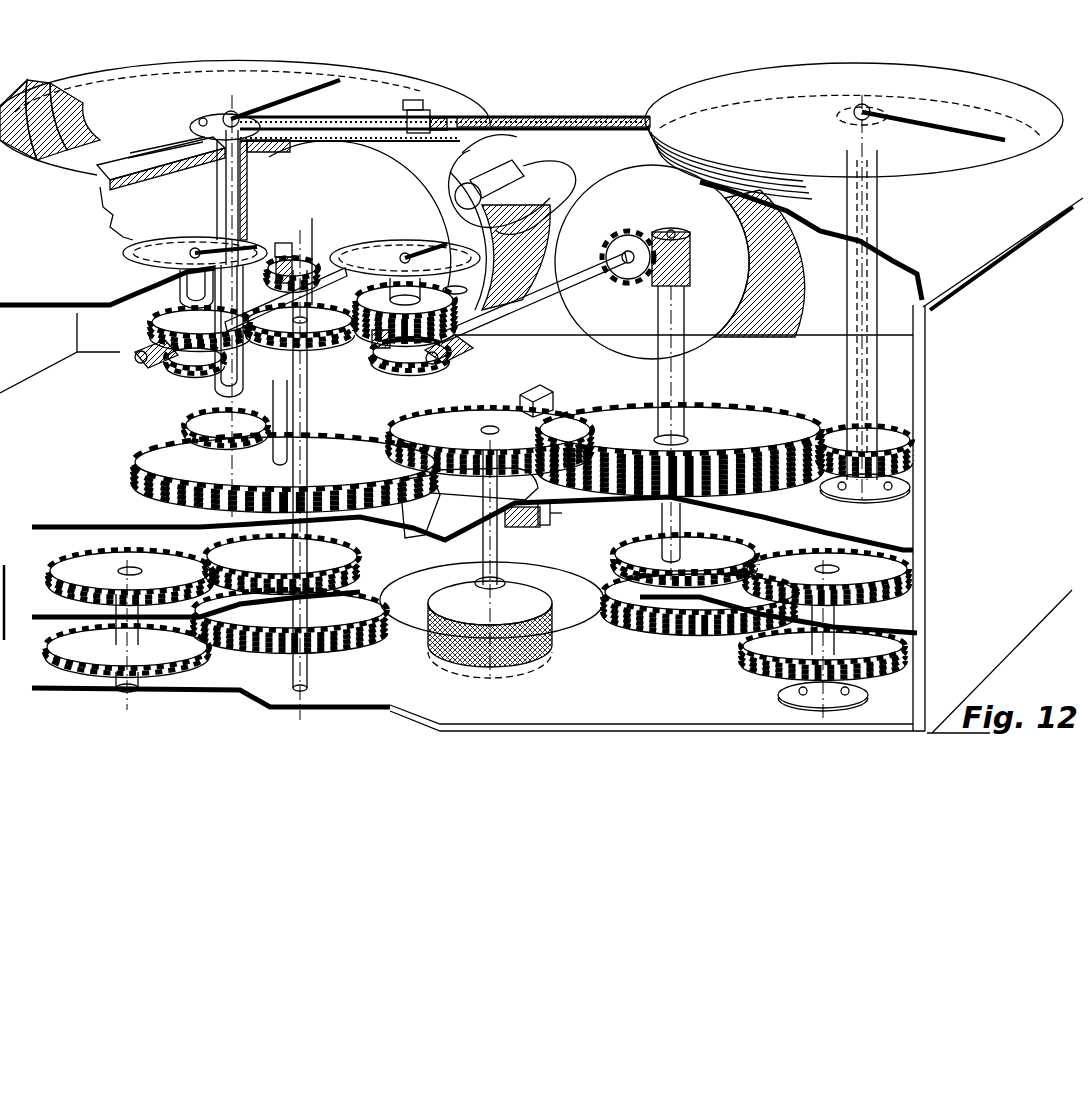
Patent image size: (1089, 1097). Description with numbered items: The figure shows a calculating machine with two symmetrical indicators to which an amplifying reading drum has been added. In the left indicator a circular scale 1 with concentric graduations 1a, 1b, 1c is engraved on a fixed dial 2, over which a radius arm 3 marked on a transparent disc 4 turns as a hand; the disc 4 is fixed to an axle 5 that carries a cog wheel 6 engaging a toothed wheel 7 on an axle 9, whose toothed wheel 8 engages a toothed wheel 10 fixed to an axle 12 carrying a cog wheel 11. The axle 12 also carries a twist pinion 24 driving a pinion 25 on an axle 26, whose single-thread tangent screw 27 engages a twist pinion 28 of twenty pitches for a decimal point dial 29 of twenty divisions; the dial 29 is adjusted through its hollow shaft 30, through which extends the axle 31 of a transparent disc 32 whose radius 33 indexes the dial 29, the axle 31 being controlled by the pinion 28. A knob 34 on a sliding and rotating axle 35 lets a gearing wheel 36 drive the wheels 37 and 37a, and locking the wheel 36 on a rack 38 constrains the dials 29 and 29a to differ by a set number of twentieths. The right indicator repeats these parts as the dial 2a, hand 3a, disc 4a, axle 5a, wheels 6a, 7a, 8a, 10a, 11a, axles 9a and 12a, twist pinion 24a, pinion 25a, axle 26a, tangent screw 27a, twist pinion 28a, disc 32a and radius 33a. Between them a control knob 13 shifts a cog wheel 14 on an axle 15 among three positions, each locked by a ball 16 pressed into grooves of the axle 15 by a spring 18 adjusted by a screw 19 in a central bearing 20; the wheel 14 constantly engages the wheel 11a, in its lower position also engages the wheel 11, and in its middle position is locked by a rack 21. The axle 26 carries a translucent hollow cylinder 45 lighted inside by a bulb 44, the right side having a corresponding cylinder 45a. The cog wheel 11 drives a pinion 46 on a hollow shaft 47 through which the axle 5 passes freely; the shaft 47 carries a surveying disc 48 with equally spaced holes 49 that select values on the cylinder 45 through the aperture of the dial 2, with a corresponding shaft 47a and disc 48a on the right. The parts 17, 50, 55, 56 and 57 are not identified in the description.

The circular scale 1 is at (80, 108).
The concentric graduation 1a is at (28, 132).
The concentric graduation 1b is at (50, 140).
The concentric graduation 1c is at (75, 150).
The fixed dial 2 is at (150, 188).
The radius arm 3 is at (268, 112).
The transparent disc 4 is at (138, 150).
The axle 5 is at (240, 198).
The surveying disc 48 is at (165, 190).
The stop 50 is at (418, 100).
The holes 49 is at (425, 135).
The electrical bulb 44 is at (478, 182).
The cylinder 45 is at (405, 164).
The cylinder 45a is at (598, 168).
The transparent disc 4a is at (655, 152).
The fixed dial 2a is at (670, 167).
The surveying disc 48a is at (700, 185).
The radius arm 3a is at (953, 128).
The axle 5a is at (878, 224).
The hollow shaft 47a is at (847, 354).
The twist pinion 24 is at (280, 243).
The rack 38 is at (311, 251).
The pinion 25 is at (372, 242).
The radius 33a is at (425, 247).
The radius 33 is at (215, 249).
The transparent disc 32 is at (135, 250).
The axle 31 is at (185, 266).
The hollow shaft 30 is at (173, 300).
The wheel 37 is at (152, 324).
The gearing wheel 36 is at (300, 328).
The decimal point dial 29 is at (278, 278).
The axle 26 is at (266, 333).
The tangent screw 27 is at (140, 362).
The twist pinion 28 is at (190, 370).
The hollow shaft 47 is at (215, 405).
The pinion 46 is at (187, 426).
The axle 12 is at (273, 441).
The cog wheel 11 is at (285, 474).
The cog wheel 14 is at (490, 442).
The rack 21 is at (540, 391).
The axle 26a is at (556, 298).
The decimal point dial 29a is at (470, 291).
The transparent disc 32a is at (455, 306).
The wheel 37a is at (382, 351).
The twist pinion 28a is at (408, 367).
The tangent screw 27a is at (460, 358).
The pinion 25a is at (622, 234).
The twist pinion 24a is at (692, 256).
The axle 12a is at (684, 374).
The cog wheel 11a is at (680, 451).
The toothed wheel 8 is at (130, 578).
The axle 9 is at (138, 630).
The toothed wheel 7 is at (127, 652).
The toothed wheel 10 is at (282, 565).
The cog wheel 6 is at (290, 621).
The sliding and rotating axle 35 is at (308, 662).
The knob 34 is at (262, 706).
The plate 57 is at (420, 540).
The bar 56 is at (484, 484).
The arm 55 is at (412, 510).
The bearing 17 is at (475, 580).
The axle 15 is at (498, 581).
The ball 16 is at (570, 585).
The spring 18 is at (540, 528).
The screw 19 is at (550, 516).
The central bearing 20 is at (562, 513).
The control knob 13 is at (540, 632).
The toothed wheel 10a is at (685, 561).
The toothed wheel 8a is at (827, 578).
The cog wheel 6a is at (740, 620).
The toothed wheel 7a is at (823, 671).
The axle 9a is at (835, 637).